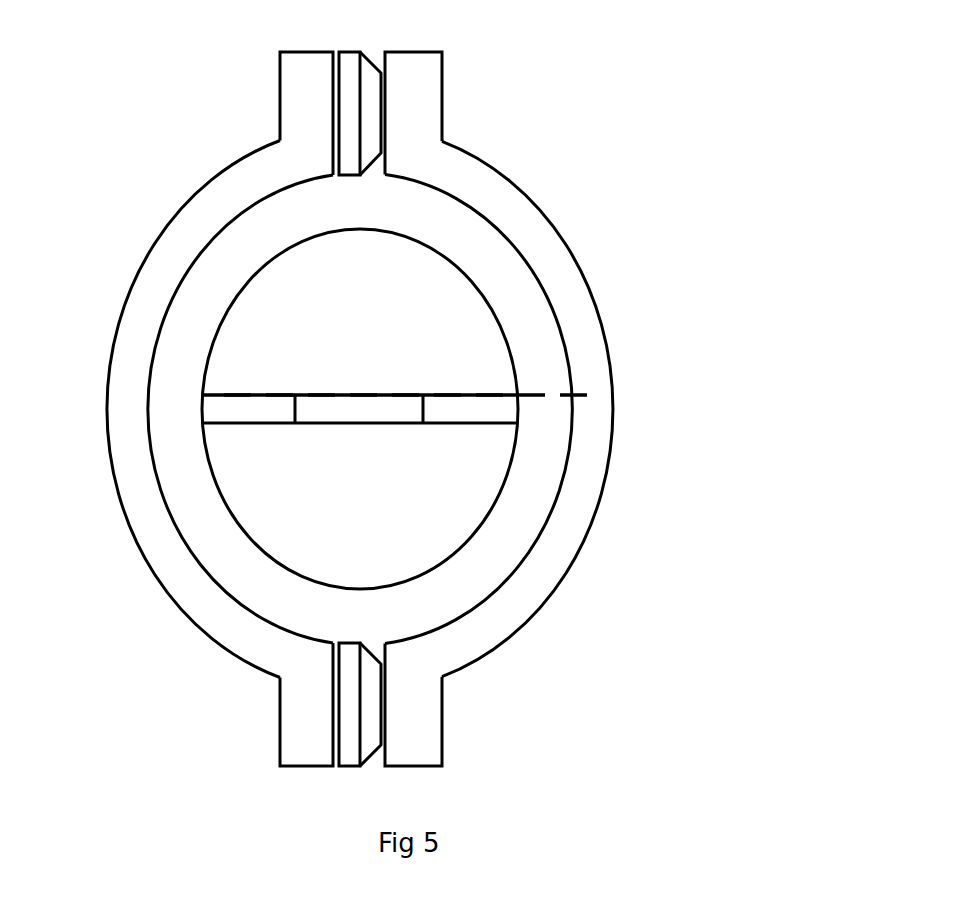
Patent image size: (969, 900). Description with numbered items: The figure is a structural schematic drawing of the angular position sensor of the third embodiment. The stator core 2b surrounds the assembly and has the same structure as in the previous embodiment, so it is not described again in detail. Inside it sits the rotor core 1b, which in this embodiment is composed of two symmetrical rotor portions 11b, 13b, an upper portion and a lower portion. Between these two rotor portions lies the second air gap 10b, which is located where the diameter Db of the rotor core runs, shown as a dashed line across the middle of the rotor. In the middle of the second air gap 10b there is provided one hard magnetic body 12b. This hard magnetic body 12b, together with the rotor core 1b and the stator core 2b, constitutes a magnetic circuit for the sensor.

The rotor core 1b is at (548, 258).
The stator core 2b is at (687, 288).
The second air gap 10b is at (520, 408).
The rotor portion 11b is at (262, 335).
The hard magnetic body 12b is at (410, 385).
The rotor portion 13b is at (267, 483).
The diameter Db is at (548, 400).